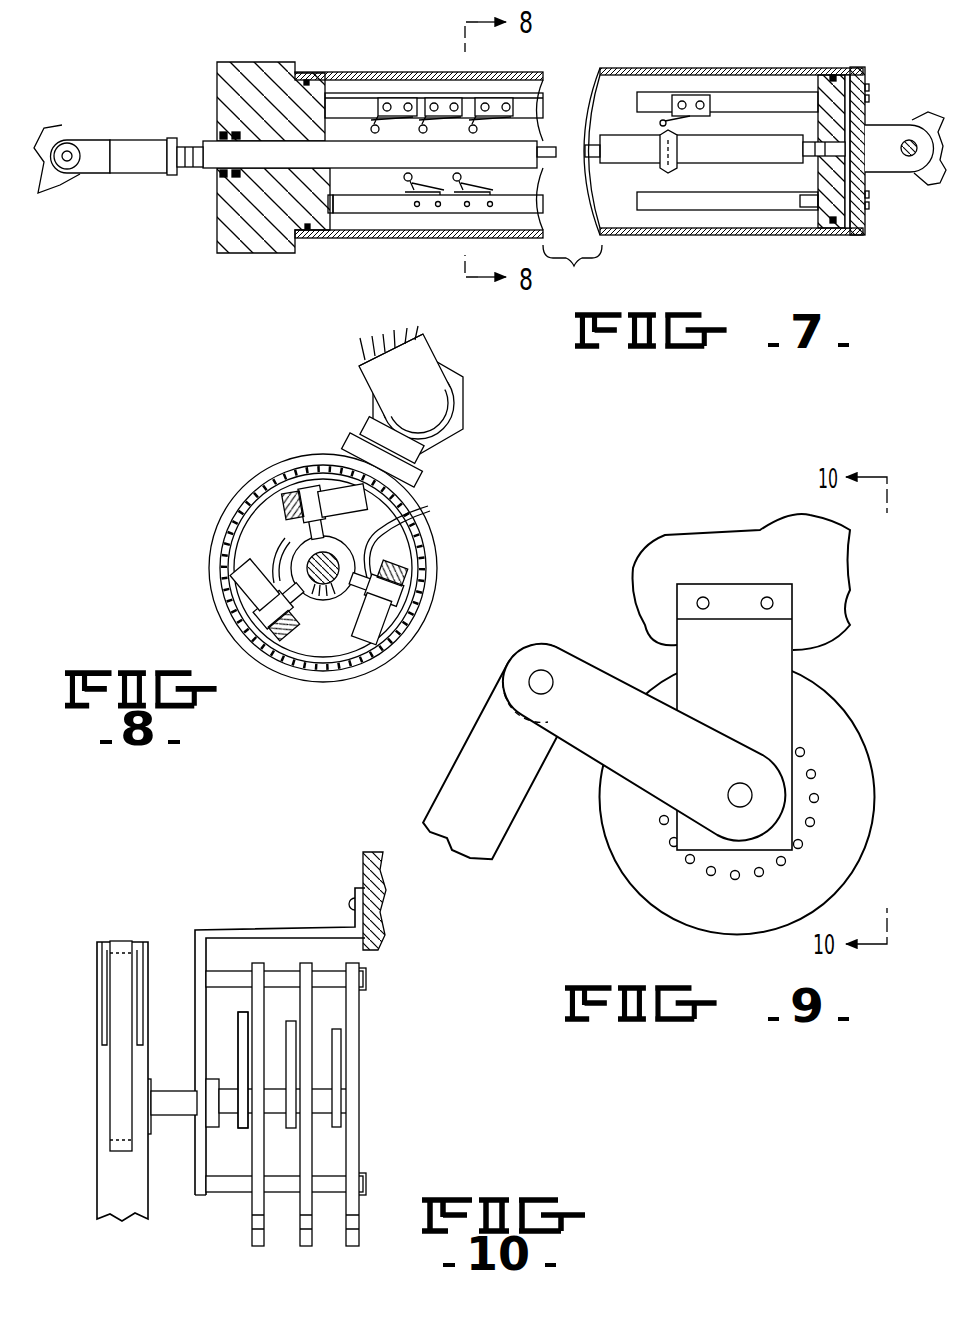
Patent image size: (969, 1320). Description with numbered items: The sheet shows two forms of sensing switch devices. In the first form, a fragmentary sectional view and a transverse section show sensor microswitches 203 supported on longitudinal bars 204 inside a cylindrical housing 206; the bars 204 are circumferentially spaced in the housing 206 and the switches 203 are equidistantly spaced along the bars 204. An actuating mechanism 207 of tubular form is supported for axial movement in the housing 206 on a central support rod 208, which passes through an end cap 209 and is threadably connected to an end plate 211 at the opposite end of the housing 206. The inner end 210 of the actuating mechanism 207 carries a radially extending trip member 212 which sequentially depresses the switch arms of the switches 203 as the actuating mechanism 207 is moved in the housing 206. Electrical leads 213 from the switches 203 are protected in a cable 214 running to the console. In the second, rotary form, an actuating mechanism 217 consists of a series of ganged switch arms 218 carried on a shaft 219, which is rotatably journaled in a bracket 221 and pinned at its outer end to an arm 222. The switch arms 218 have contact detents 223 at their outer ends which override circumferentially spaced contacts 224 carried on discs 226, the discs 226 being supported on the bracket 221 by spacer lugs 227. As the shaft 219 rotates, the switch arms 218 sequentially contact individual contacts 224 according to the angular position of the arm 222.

In FIG. 7, the sensor microswitches 203 is at (437, 97).
In FIG. 8, the sensor microswitches 203 is at (310, 500).
In FIG. 7, the longitudinal bars 204 is at (380, 205).
In FIG. 8, the longitudinal bars 204 is at (297, 496).
In FIG. 7, the cylindrical housing 206 is at (658, 70).
In FIG. 8, the cylindrical housing 206 is at (240, 518).
In FIG. 7, the actuating mechanism 207 is at (196, 134).
In FIG. 8, the actuating mechanism 207 is at (342, 580).
In FIG. 7, the central support rod 208 is at (850, 143).
In FIG. 8, the central support rod 208 is at (326, 580).
In FIG. 7, the end cap 209 is at (282, 62).
In FIG. 7, the inner end 210 is at (735, 160).
In FIG. 7, the end plate 211 is at (838, 72).
In FIG. 7, the trip member 212 is at (663, 167).
In FIG. 8, the trip member 212 is at (300, 549).
In FIG. 8, the electrical leads 213 is at (362, 535).
In FIG. 8, the cable 214 is at (423, 371).
In FIG. 9, the actuating mechanism 217 is at (468, 711).
In FIG. 10, the actuating mechanism 217 is at (90, 1128).
In FIG. 10, the ganged switch arms 218 is at (246, 1020).
In FIG. 9, the shaft 219 is at (734, 789).
In FIG. 10, the shaft 219 is at (177, 1099).
In FIG. 9, the bracket 221 is at (734, 627).
In FIG. 10, the bracket 221 is at (264, 930).
In FIG. 9, the arm 222 is at (589, 752).
In FIG. 10, the arm 222 is at (122, 942).
In FIG. 10, the contact detents 223 is at (338, 1035).
In FIG. 9, the contacts 224 is at (814, 820).
In FIG. 9, the discs 226 is at (858, 747).
In FIG. 10, the discs 226 is at (354, 1161).
In FIG. 10, the spacer lugs 227 is at (226, 980).